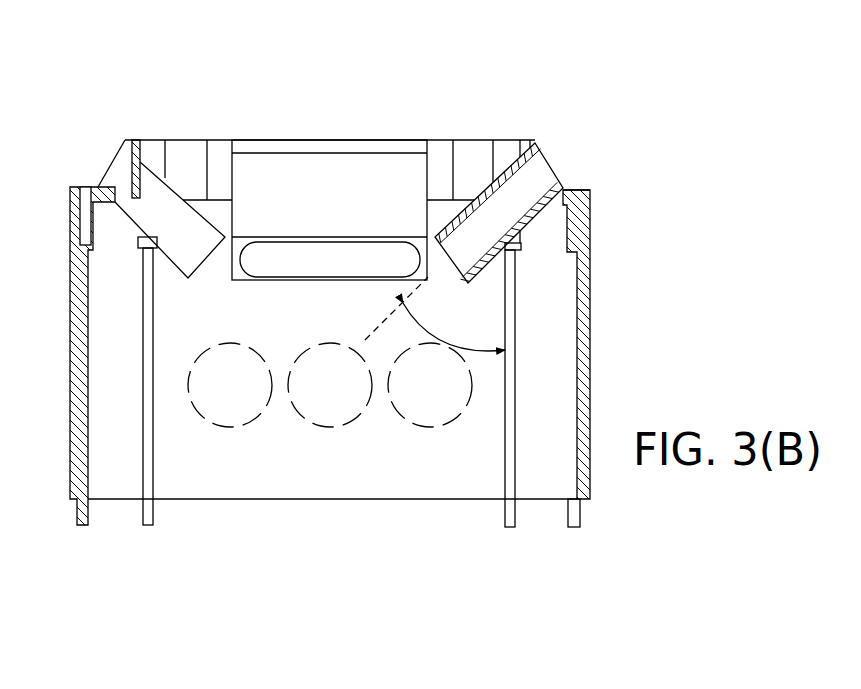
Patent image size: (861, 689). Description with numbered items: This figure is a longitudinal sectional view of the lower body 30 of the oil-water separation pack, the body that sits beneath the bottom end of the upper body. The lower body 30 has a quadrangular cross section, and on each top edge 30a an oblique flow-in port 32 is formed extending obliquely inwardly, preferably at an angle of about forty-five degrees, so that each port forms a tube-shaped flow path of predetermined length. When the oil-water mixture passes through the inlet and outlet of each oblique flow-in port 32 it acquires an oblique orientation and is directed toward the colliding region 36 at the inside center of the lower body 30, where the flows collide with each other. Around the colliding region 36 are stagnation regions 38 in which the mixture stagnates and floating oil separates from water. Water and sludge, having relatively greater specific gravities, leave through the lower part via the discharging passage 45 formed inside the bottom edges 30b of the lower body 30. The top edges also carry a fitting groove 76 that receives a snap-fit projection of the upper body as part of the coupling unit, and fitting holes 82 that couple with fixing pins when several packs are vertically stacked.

The lower body 30 is at (478, 110).
The top edge 30a is at (583, 188).
The bottom edges 30b is at (382, 499).
The oblique flow-in port 32 is at (538, 180).
The colliding region 36 is at (333, 413).
The stagnation regions 38 is at (233, 413).
The discharging passage 45 is at (280, 466).
The fitting groove 76 is at (125, 198).
The fitting holes 82 is at (83, 200).